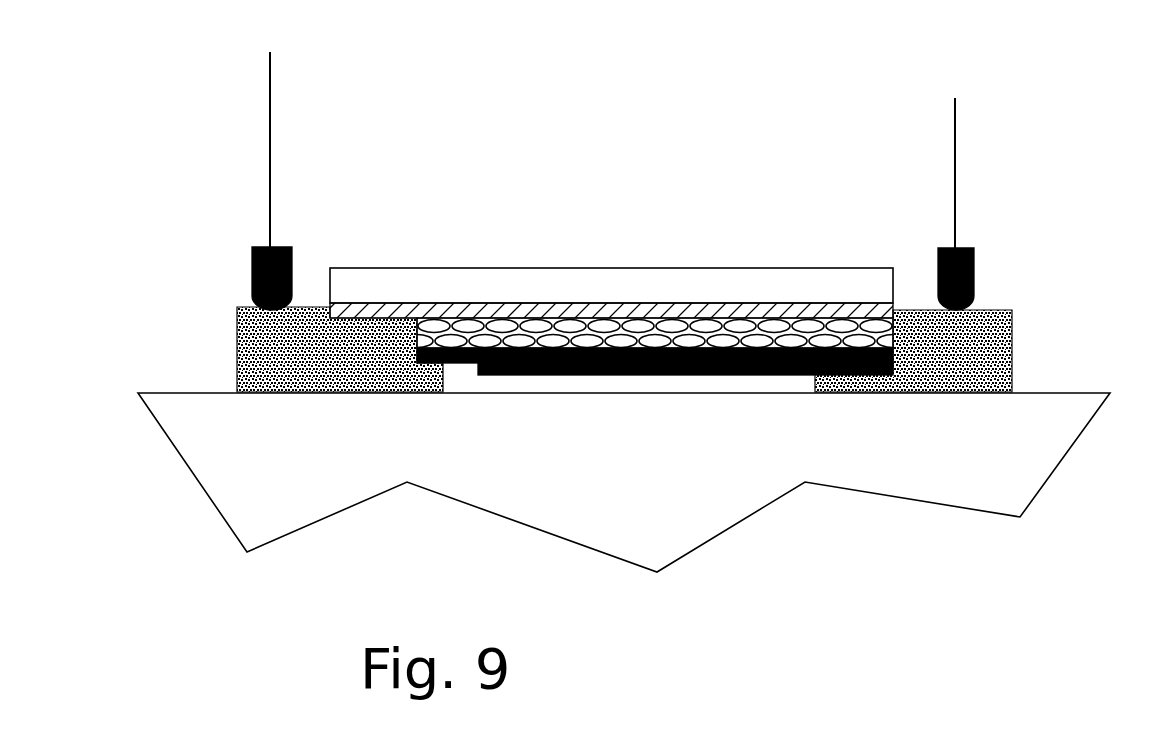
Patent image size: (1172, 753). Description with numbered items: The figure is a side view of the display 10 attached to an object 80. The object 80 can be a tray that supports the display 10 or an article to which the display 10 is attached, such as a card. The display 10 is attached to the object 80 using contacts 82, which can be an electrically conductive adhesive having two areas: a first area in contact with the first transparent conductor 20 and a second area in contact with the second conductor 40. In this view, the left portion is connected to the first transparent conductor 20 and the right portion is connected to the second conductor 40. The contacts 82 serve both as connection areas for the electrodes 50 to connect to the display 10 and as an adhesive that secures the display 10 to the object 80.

The display 10 is at (704, 246).
The first transparent conductor 20 is at (437, 318).
The second conductor 40 is at (765, 375).
The electrodes 50 is at (252, 272).
The object 80 is at (233, 492).
The contacts 82 is at (255, 358).